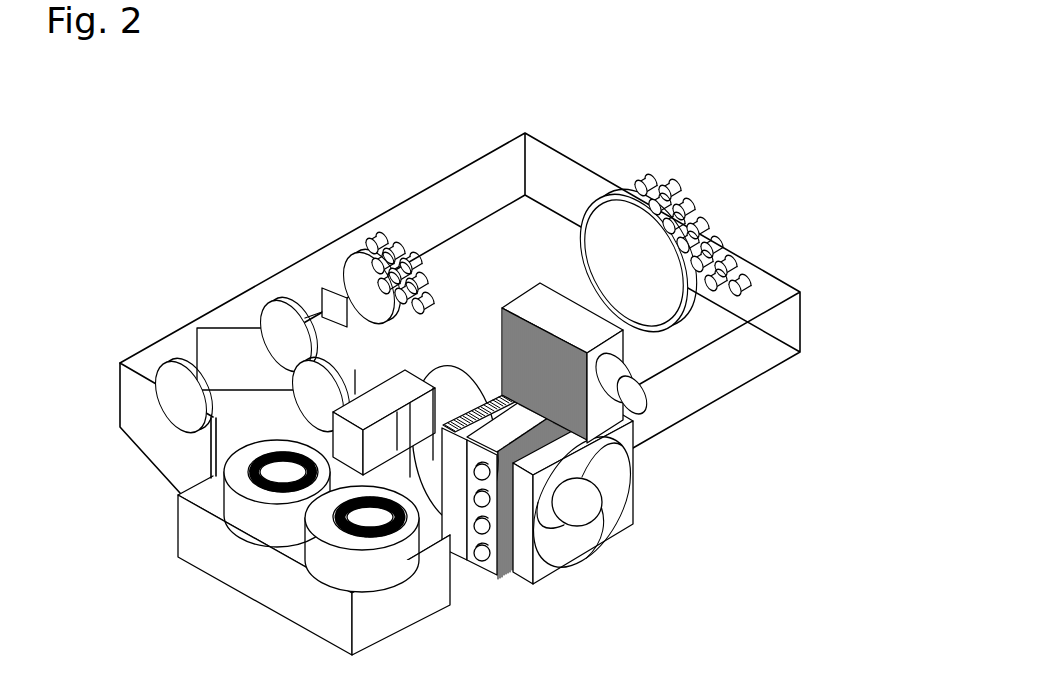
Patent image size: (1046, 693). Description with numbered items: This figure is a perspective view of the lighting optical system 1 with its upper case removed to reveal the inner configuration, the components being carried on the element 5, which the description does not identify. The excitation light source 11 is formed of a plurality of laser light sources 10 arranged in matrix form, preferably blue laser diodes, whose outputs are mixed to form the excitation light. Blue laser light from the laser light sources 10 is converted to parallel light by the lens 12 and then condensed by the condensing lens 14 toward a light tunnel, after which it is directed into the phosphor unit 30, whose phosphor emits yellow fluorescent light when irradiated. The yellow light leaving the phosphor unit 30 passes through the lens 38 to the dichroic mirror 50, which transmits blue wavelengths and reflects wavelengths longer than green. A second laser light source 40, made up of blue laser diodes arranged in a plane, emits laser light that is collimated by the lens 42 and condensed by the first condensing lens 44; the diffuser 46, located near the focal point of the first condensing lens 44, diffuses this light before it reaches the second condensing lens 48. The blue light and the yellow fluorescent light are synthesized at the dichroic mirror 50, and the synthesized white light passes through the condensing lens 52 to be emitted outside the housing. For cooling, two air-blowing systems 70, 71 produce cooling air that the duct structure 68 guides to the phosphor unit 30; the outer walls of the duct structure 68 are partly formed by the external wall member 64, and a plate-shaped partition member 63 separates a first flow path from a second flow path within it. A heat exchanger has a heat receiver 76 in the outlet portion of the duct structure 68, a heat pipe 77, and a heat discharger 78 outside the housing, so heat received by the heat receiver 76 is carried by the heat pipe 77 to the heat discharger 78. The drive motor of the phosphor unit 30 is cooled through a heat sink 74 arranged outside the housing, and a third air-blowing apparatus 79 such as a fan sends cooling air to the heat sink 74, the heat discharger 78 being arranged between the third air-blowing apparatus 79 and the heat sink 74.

The lighting optical system 1 is at (193, 231).
The housing base 5 is at (790, 324).
The laser light source 10 is at (697, 200).
The excitation light source 11 is at (653, 172).
The lens 12 is at (703, 300).
The condensing lens 14 is at (660, 325).
The phosphor unit 30 is at (465, 373).
The lens 38 is at (121, 427).
The second laser light source 40 is at (418, 252).
The lens 42 is at (375, 238).
The first condensing lens 44 is at (378, 411).
The diffuser 46 is at (333, 367).
The second condensing lens 48 is at (275, 300).
The dichroic mirror 50 is at (216, 337).
The condensing lens 52 is at (167, 389).
The partition member 63 is at (392, 392).
The external wall member 64 is at (392, 392).
The duct structure 68 is at (330, 288).
The air-blowing system 70 is at (227, 497).
The air-blowing system 71 is at (317, 553).
The heat sink 74 is at (453, 490).
The heat receiver 76 is at (553, 304).
The heat pipe 77 is at (638, 376).
The heat discharger 78 is at (483, 568).
The third air-blowing apparatus 79 is at (634, 522).